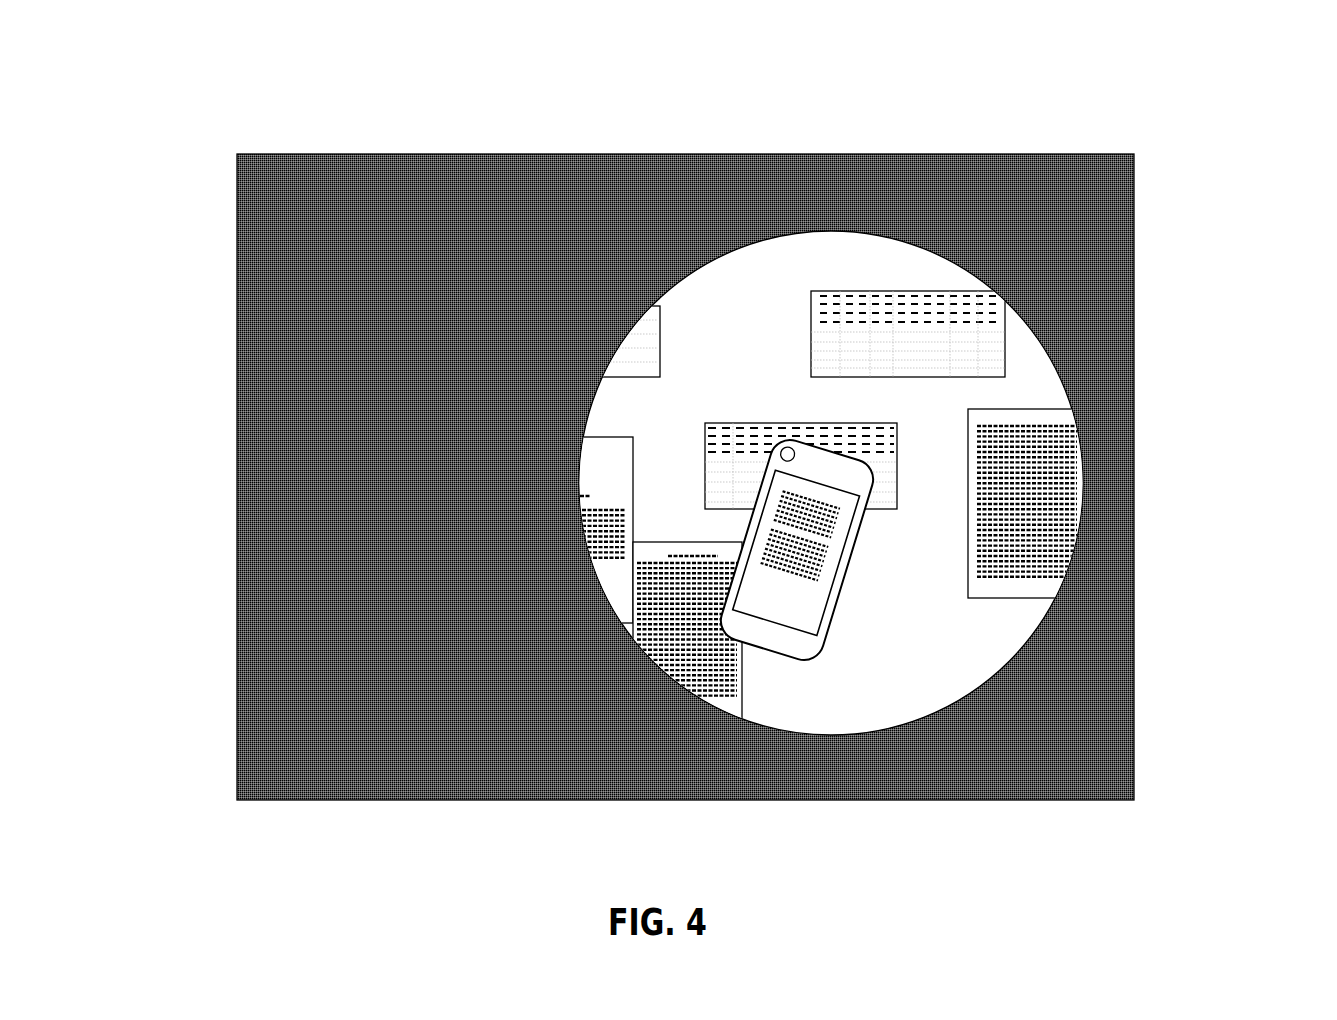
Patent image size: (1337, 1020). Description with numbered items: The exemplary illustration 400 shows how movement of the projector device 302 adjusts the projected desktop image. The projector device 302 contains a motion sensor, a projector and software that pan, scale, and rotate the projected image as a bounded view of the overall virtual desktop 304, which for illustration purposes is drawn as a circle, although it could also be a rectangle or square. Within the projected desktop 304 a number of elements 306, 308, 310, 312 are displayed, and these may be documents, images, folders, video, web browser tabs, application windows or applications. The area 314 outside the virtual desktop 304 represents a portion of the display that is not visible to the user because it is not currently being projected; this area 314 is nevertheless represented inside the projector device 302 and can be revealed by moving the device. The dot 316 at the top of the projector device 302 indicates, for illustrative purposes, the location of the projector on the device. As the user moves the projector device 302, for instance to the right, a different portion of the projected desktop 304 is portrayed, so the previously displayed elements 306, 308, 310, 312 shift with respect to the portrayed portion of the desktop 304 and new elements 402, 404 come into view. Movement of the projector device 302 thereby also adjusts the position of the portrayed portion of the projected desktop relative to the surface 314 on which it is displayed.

The exemplary illustration 400 is at (139, 62).
The projector device 302 is at (788, 662).
The virtual desktop 304 is at (900, 233).
The element 306 is at (897, 440).
The element 308 is at (650, 662).
The element 310 is at (653, 312).
The element 312 is at (593, 480).
The area outside the virtual desktop 314 is at (1060, 738).
The dot 316 is at (622, 636).
The new element 402 is at (1038, 547).
The new element 404 is at (960, 332).